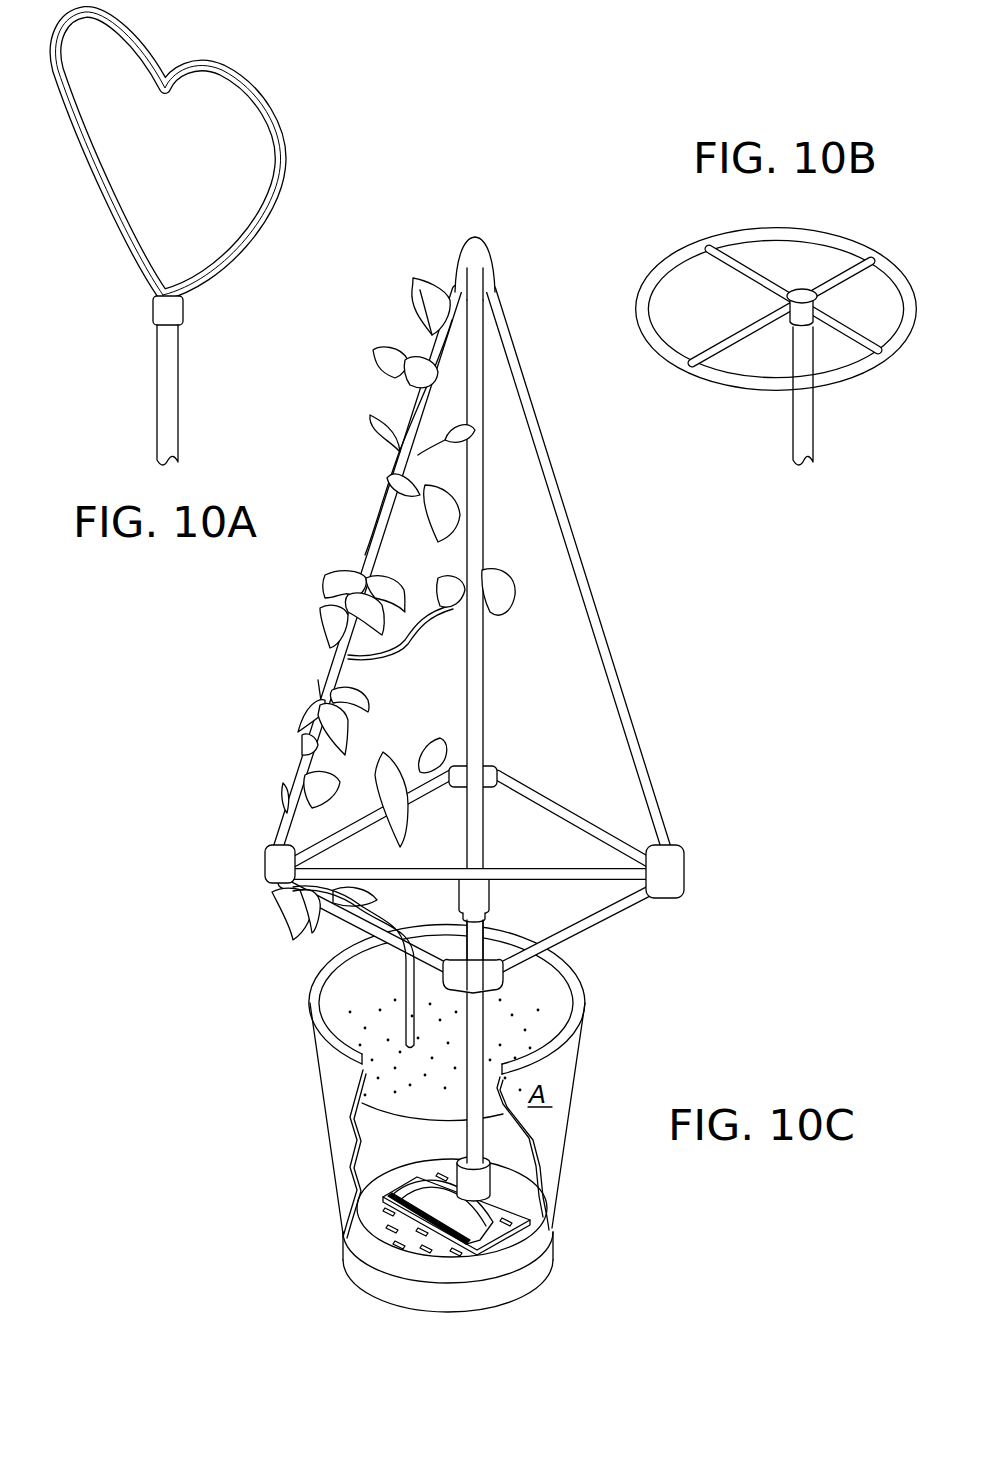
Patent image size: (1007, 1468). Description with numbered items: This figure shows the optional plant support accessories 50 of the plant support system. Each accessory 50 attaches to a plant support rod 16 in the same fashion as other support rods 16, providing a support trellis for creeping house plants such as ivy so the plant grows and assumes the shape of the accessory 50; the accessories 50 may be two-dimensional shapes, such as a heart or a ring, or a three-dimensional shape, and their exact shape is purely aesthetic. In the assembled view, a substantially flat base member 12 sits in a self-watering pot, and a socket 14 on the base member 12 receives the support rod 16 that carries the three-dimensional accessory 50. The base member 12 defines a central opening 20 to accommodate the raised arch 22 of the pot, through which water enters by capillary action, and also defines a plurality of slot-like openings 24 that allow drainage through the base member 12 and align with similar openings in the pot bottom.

In FIG. 10C, the base member 12 is at (523, 1223).
In FIG. 10C, the socket 14 is at (480, 1183).
In FIG. 10A, the plant support rod 16 is at (170, 385).
In FIG. 10B, the plant support rod 16 is at (800, 425).
In FIG. 10C, the plant support rod 16 is at (480, 1028).
In FIG. 10C, the central opening 20 is at (507, 1237).
In FIG. 10C, the raised arch 22 is at (477, 1227).
In FIG. 10C, the slot-like openings 24 is at (397, 1243).
In FIG. 10A, the plant support accessory 50 is at (267, 140).
In FIG. 10B, the plant support accessory 50 is at (683, 253).
In FIG. 10C, the plant support accessory 50 is at (492, 700).